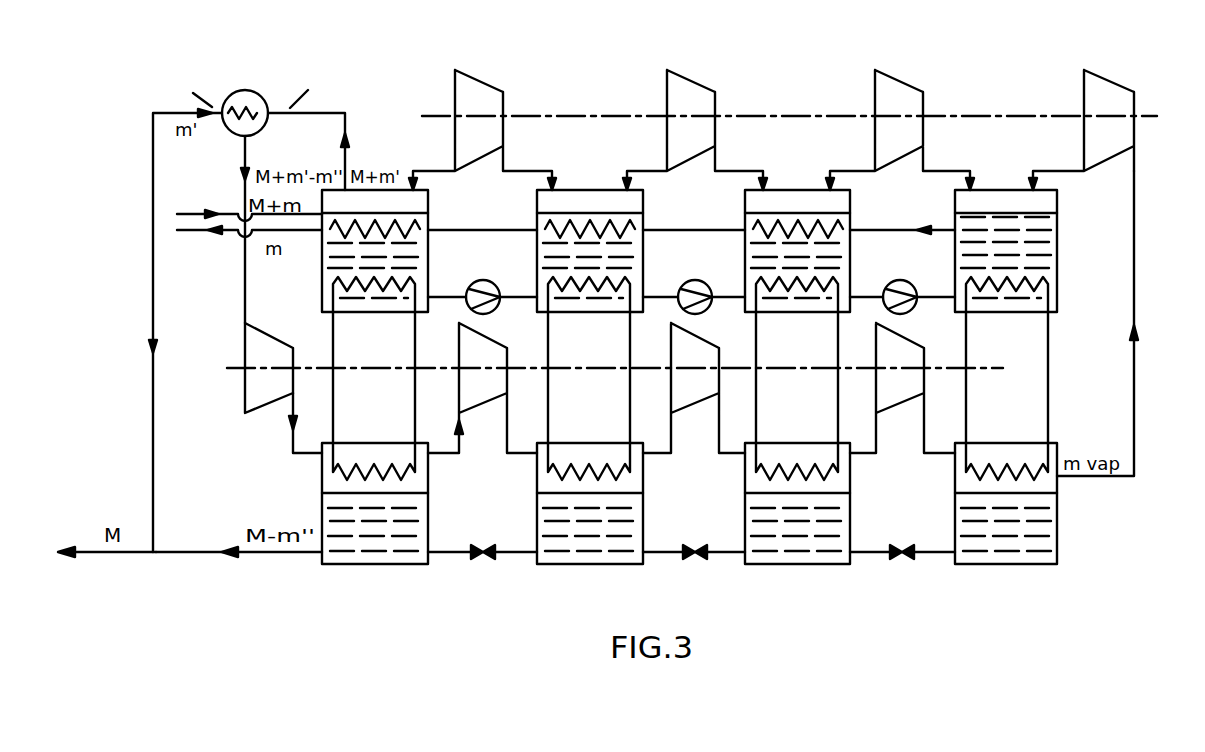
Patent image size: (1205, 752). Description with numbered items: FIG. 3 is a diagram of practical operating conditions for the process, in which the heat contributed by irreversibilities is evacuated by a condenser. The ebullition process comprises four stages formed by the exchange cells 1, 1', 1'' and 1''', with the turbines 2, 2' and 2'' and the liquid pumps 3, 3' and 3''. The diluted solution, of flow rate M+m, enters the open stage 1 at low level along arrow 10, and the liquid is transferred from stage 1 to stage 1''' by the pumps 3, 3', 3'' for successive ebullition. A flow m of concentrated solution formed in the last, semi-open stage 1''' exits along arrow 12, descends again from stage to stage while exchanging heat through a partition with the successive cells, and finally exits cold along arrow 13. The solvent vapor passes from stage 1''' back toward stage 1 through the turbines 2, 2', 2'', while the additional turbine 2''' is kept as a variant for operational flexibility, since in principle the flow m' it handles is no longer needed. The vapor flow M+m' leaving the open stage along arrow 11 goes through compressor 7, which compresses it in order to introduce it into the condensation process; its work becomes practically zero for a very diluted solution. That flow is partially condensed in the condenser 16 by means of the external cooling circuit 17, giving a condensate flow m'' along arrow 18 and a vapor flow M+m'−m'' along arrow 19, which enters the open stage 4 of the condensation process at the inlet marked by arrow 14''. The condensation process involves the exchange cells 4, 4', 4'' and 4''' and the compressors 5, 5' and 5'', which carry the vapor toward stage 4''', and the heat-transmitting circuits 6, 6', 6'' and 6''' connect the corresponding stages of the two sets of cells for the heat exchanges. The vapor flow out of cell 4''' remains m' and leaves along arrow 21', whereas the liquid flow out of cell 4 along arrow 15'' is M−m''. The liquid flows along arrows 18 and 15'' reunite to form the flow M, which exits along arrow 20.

The exchange cell 1 is at (384, 251).
The exchange cell 1' is at (601, 251).
The exchange cell 1'' is at (812, 251).
The exchange cell 1''' is at (1030, 250).
The turbine 2 is at (478, 124).
The turbine 2' is at (695, 124).
The turbine 2'' is at (900, 123).
The additional turbine 2''' is at (1081, 123).
The liquid pump 3 is at (482, 283).
The liquid pump 3' is at (694, 282).
The liquid pump 3'' is at (902, 282).
The exchange cell 4 is at (375, 520).
The exchange cell 4' is at (590, 522).
The exchange cell 4'' is at (797, 522).
The exchange cell 4''' is at (1006, 524).
The compressor 5 is at (482, 386).
The compressor 5' is at (694, 385).
The compressor 5'' is at (903, 387).
The heat-transmitting circuit 6 is at (374, 378).
The heat-transmitting circuit 6' is at (589, 378).
The heat-transmitting circuit 6'' is at (797, 378).
The heat-transmitting circuit 6''' is at (1007, 378).
The compressor 7 is at (243, 393).
The arrow 10 is at (198, 214).
The arrow 11 is at (350, 158).
The arrow 12 is at (903, 229).
The arrow 13 is at (202, 232).
The outlet line 14'' is at (277, 426).
The arrow 15'' is at (239, 570).
The condenser 16 is at (272, 93).
The external cooling circuit 17 is at (285, 102).
The arrow 18 is at (160, 112).
The arrow 19 is at (247, 160).
The arrow 20 is at (110, 562).
The vapor return line 21' is at (1122, 323).